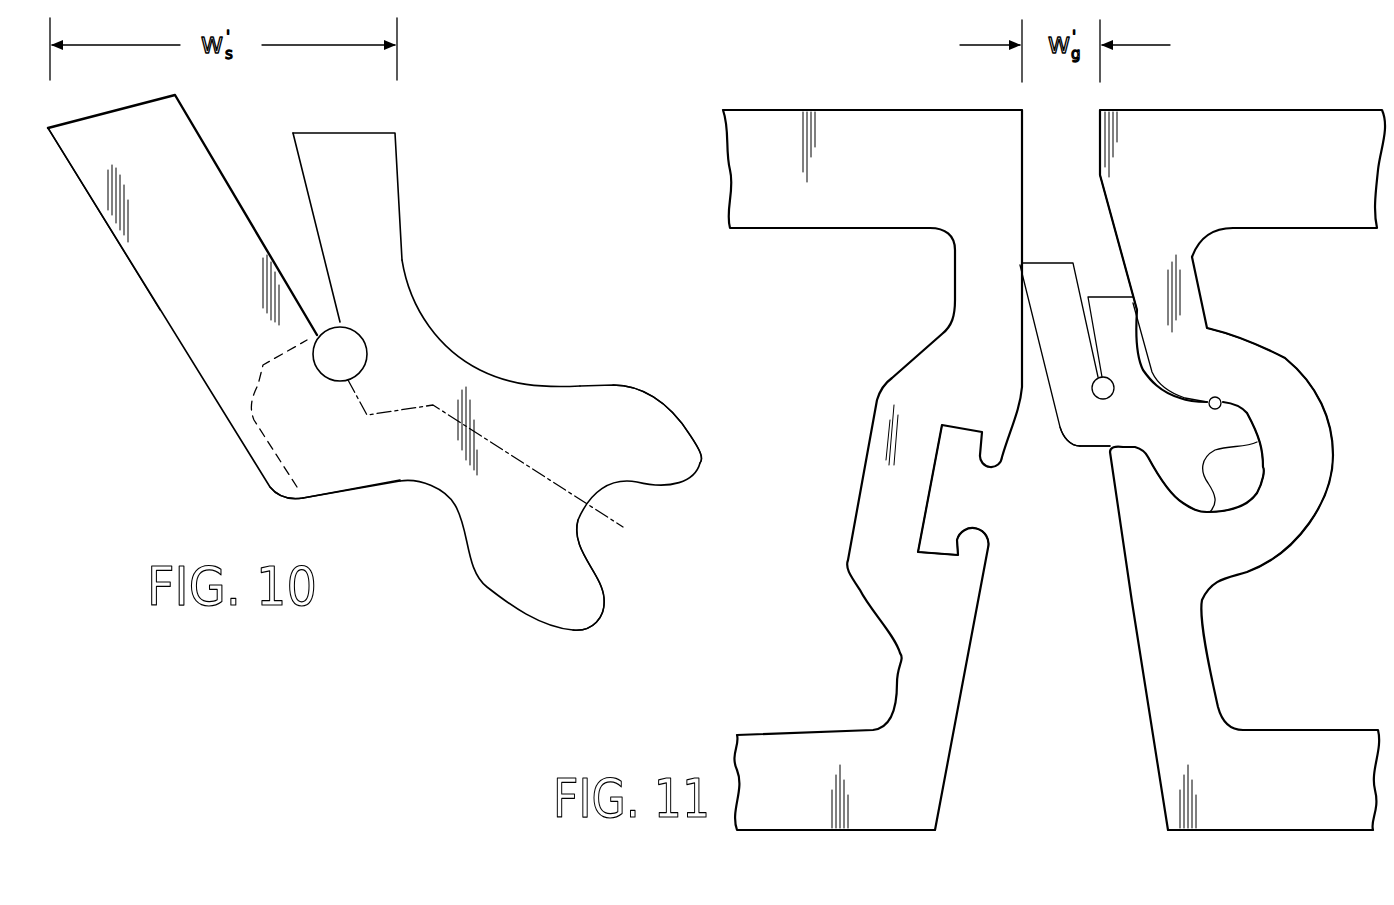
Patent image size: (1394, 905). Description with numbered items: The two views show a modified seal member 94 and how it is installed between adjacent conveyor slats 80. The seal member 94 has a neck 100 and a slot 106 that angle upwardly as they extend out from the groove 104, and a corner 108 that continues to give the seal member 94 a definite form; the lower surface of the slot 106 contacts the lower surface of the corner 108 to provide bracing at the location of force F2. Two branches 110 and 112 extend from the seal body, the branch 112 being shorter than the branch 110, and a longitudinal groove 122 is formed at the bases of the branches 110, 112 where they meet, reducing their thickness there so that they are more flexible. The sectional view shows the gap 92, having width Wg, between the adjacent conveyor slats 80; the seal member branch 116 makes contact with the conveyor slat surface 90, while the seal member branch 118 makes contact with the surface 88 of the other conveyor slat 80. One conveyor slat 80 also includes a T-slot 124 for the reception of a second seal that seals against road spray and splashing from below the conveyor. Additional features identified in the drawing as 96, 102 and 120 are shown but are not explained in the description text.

In FIG. 11, the conveyor slat 80 is at (840, 120).
In FIG. 11, the surface 88 is at (1100, 175).
In FIG. 11, the conveyor slat surface 90 is at (1022, 230).
In FIG. 11, the gap 92 is at (1072, 138).
In FIG. 10, the seal member 94 is at (392, 485).
In FIG. 11, the seal member 94 is at (1091, 454).
In FIG. 10, the lobe of head 96 is at (645, 410).
In FIG. 11, the lobe of head 96 is at (1240, 425).
In FIG. 10, the neck 100 is at (545, 395).
In FIG. 11, the socket contact point 102 is at (1243, 498).
In FIG. 10, the groove 104 is at (608, 548).
In FIG. 11, the groove 104 is at (1238, 472).
In FIG. 11, the slot 106 is at (1213, 397).
In FIG. 10, the corner 108 is at (307, 472).
In FIG. 11, the corner 108 is at (1073, 430).
In FIG. 10, the branch 110 is at (90, 197).
In FIG. 10, the branch 112 is at (400, 170).
In FIG. 10, the seal member branch 116 is at (170, 292).
In FIG. 11, the seal member branch 116 is at (1033, 283).
In FIG. 10, the seal member branch 118 is at (390, 243).
In FIG. 11, the seal member branch 118 is at (1118, 333).
In FIG. 10, the phantom blade position 120 is at (250, 392).
In FIG. 10, the longitudinal groove 122 is at (355, 350).
In FIG. 11, the longitudinal groove 122 is at (1092, 390).
In FIG. 11, the T-slot 124 is at (950, 538).
In FIG. 11, the force F2 is at (1125, 452).